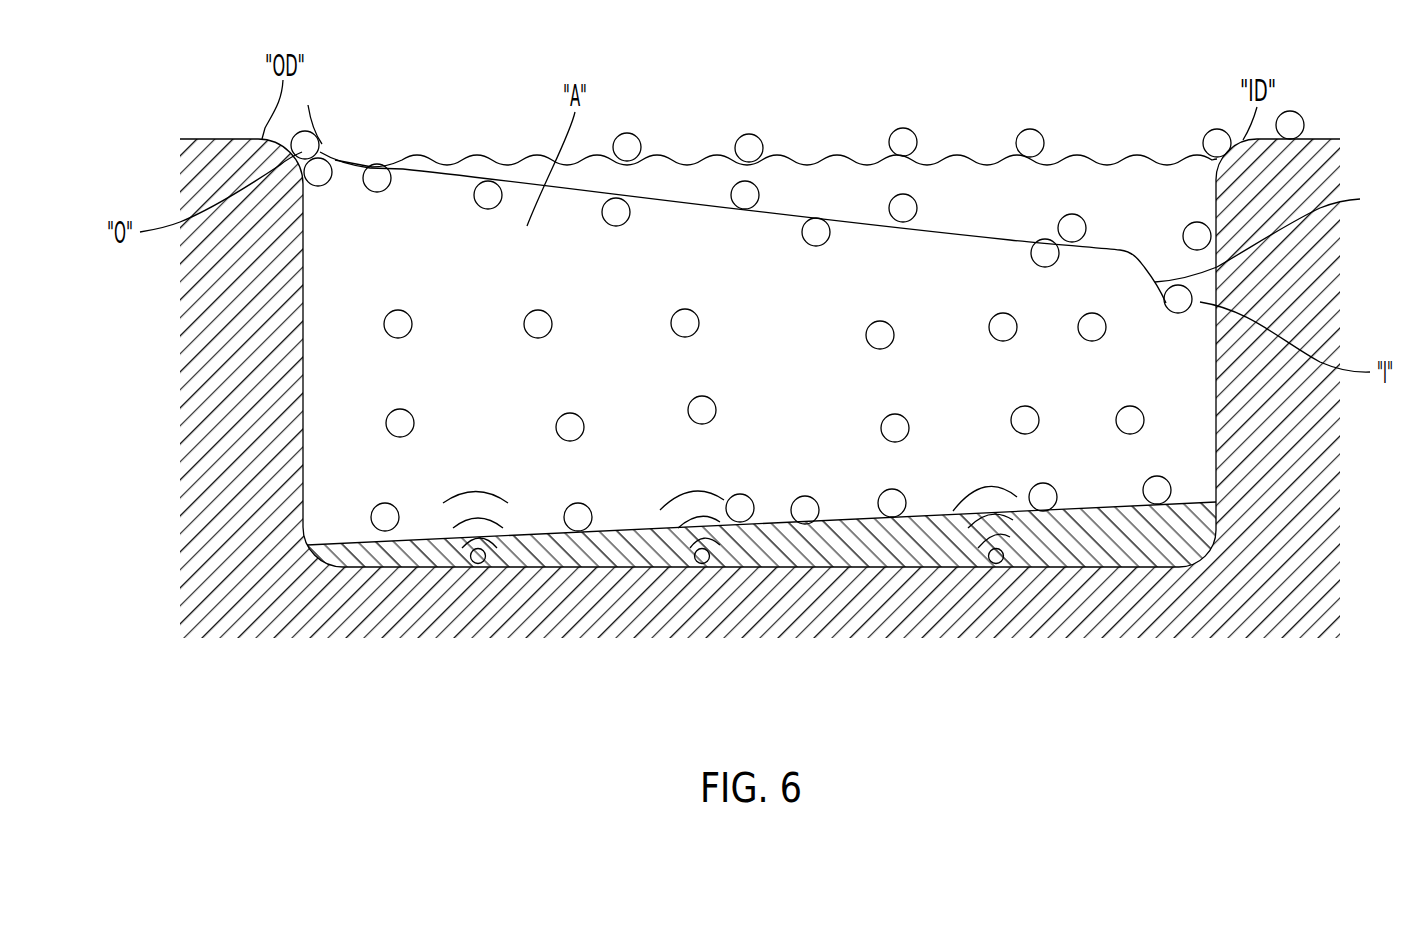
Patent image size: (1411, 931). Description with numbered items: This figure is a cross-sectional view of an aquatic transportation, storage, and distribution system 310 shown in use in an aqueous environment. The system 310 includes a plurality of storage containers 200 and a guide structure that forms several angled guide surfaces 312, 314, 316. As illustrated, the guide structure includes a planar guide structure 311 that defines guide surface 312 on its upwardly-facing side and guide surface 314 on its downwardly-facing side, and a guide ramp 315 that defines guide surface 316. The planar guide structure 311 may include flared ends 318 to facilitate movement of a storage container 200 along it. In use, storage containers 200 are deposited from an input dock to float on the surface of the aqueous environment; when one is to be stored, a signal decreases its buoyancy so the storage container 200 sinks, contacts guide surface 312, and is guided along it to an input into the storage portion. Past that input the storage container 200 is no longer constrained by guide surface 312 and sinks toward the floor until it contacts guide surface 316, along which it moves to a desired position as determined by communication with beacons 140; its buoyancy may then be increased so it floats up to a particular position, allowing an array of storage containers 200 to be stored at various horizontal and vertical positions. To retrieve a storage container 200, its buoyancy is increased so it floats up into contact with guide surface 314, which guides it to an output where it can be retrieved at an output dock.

The aquatic transportation, storage, and distribution system 310 is at (718, 97).
The planar guide structure 311 is at (714, 207).
The guide surface 312 is at (837, 217).
The guide surface 314 is at (860, 232).
The guide ramp 315 is at (790, 503).
The guide surface 316 is at (628, 529).
The flared ends 318 is at (320, 152).
The storage container 200 is at (1031, 130).
The beacon 140 is at (478, 564).